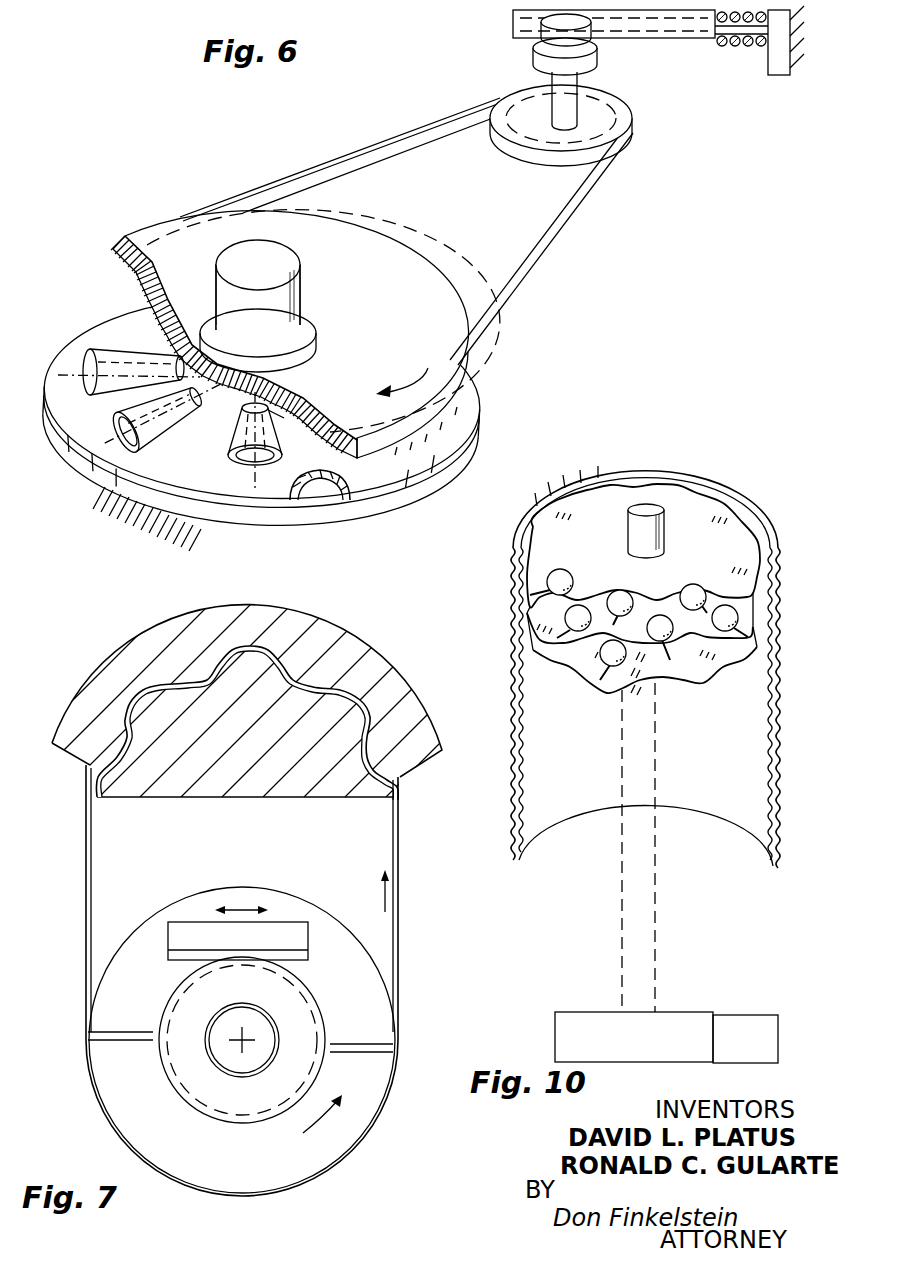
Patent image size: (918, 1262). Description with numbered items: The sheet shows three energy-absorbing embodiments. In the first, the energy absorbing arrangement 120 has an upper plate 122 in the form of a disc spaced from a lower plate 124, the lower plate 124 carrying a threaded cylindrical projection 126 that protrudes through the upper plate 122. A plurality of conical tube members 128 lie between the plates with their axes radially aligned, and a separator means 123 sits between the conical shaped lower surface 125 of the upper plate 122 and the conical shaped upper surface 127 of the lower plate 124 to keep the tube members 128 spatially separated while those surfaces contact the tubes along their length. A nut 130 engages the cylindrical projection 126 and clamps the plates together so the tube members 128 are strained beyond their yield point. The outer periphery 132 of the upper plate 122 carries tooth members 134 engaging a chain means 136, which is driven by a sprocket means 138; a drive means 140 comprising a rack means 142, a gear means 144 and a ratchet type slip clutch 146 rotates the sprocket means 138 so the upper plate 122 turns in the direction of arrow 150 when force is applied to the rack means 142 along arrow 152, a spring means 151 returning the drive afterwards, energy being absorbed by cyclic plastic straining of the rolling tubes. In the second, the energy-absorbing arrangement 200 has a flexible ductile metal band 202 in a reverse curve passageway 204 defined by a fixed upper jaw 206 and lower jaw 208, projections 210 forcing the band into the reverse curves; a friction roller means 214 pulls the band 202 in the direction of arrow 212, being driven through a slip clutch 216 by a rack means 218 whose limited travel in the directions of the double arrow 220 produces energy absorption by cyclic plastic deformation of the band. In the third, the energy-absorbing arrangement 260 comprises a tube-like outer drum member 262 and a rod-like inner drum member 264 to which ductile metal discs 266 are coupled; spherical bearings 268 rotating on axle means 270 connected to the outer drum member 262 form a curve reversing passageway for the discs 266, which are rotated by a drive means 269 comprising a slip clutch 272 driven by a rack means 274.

In FIG. 6, the energy absorbing arrangement 120 is at (248, 158).
In FIG. 6, the upper plate 122 is at (122, 246).
In FIG. 6, the separator means 123 is at (380, 472).
In FIG. 6, the lower plate 124 is at (85, 300).
In FIG. 6, the conical shaped lower surface 125 is at (270, 412).
In FIG. 6, the threaded cylindrical projection 126 is at (300, 278).
In FIG. 6, the conical shaped upper surface 127 is at (317, 498).
In FIG. 6, the conical tube members 128 is at (107, 343).
In FIG. 6, the nut 130 is at (316, 311).
In FIG. 6, the outer periphery 132 is at (488, 263).
In FIG. 6, the tooth members 134 is at (355, 229).
In FIG. 6, the chain means 136 is at (578, 233).
In FIG. 6, the sprocket means 138 is at (612, 123).
In FIG. 6, the drive means 140 is at (490, 42).
In FIG. 6, the rack means 142 is at (649, 39).
In FIG. 6, the gear means 144 is at (592, 50).
In FIG. 6, the ratchet type slip clutch 146 is at (533, 31).
In FIG. 6, the arrow 150 is at (394, 373).
In FIG. 6, the spring means 151 is at (738, 48).
In FIG. 6, the arrow 152 is at (506, 22).
In FIG. 7, the energy-absorbing arrangement 200 is at (86, 636).
In FIG. 7, the flexible ductile metal band 202 is at (86, 857).
In FIG. 7, the passageway 204 is at (153, 685).
In FIG. 7, the upper jaw 206 is at (82, 681).
In FIG. 7, the lower jaw 208 is at (237, 799).
In FIG. 7, the projections 210 is at (141, 698).
In FIG. 7, the arrow 212 is at (323, 1010).
In FIG. 7, the friction roller means 214 is at (185, 894).
In FIG. 7, the slip clutch 216 is at (320, 1015).
In FIG. 7, the rack means 218 is at (167, 945).
In FIG. 7, the double arrow 220 is at (245, 905).
In FIG. 10, the energy-absorbing arrangement 260 is at (783, 396).
In FIG. 10, the outer drum member 262 is at (733, 483).
In FIG. 10, the inner drum member 264 is at (650, 507).
In FIG. 10, the ductile metal discs 266 is at (610, 503).
In FIG. 10, the spherical bearings 268 is at (548, 577).
In FIG. 10, the drive means 269 is at (668, 1012).
In FIG. 10, the axle means 270 is at (521, 578).
In FIG. 10, the slip clutch 272 is at (590, 1000).
In FIG. 10, the rack means 274 is at (728, 1014).